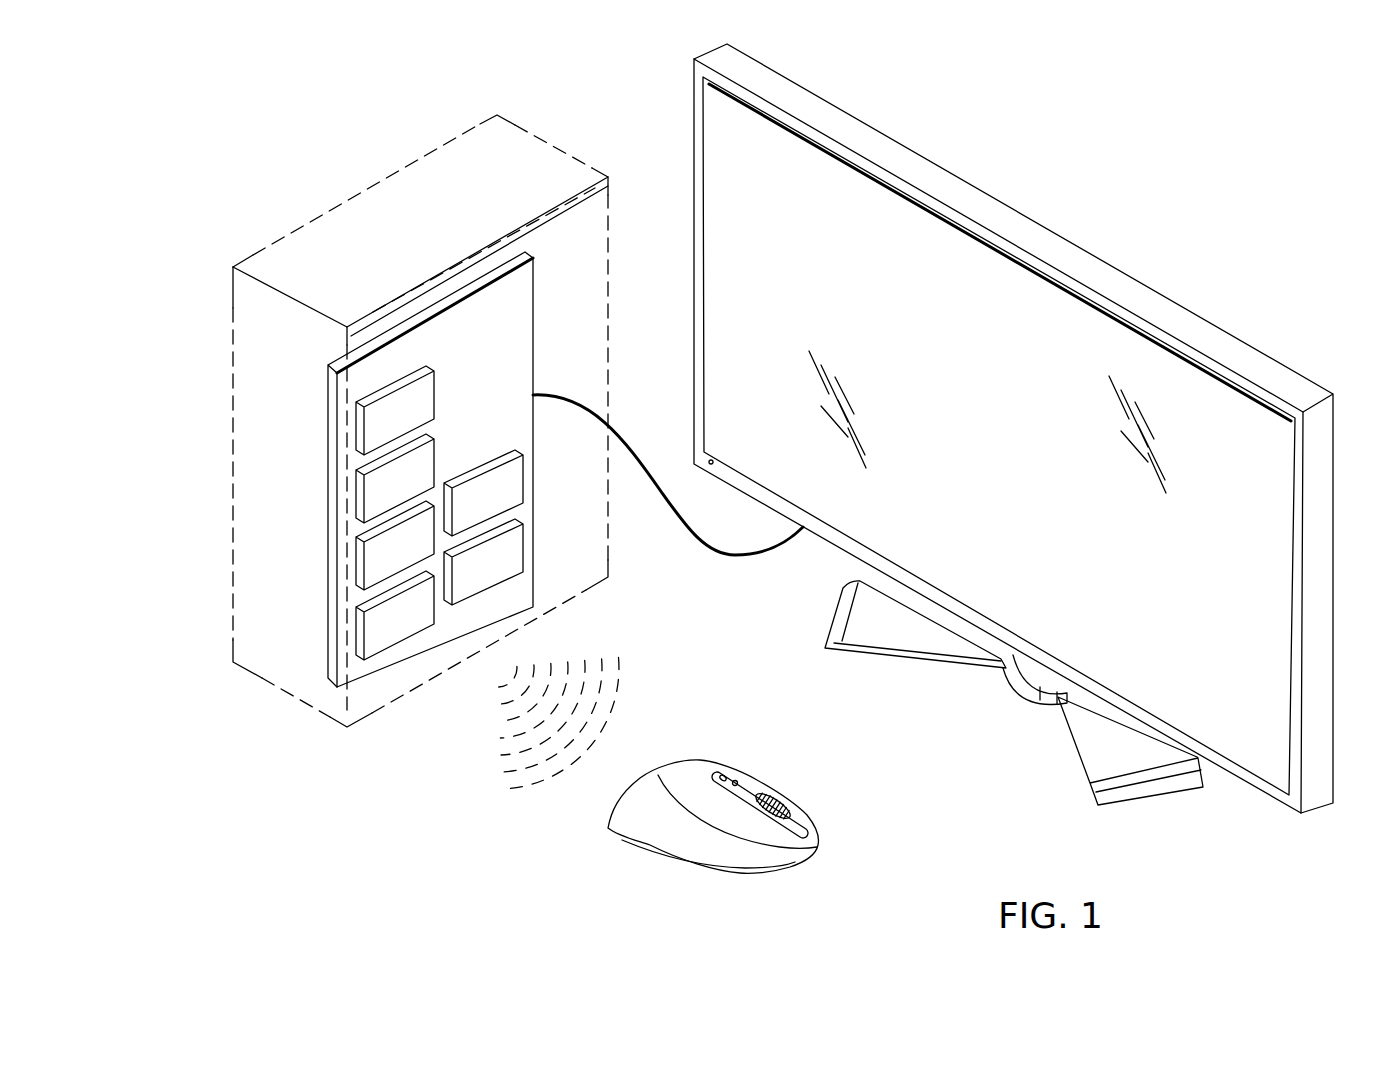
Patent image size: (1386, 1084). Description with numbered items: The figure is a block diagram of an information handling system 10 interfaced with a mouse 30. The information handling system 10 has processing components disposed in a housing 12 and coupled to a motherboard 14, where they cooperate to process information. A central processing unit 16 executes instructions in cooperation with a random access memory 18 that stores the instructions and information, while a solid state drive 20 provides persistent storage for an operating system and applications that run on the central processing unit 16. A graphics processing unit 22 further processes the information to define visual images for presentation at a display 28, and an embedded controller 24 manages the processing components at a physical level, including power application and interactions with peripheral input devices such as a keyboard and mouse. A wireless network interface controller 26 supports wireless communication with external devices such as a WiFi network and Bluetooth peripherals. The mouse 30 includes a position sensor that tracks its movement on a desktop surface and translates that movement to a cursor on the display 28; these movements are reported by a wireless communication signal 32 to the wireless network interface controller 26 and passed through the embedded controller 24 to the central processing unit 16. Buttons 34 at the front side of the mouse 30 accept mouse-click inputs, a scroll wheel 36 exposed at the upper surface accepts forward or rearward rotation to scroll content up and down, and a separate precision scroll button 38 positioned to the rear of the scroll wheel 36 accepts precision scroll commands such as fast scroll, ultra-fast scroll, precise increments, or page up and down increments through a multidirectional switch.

The information handling system 10 is at (256, 175).
The housing 12 is at (233, 375).
The motherboard 14 is at (517, 345).
The central processing unit (CPU) 16 is at (370, 432).
The random access memory (RAM) 18 is at (373, 502).
The solid state drive (SSD) 20 is at (373, 567).
The graphics processing unit (GPU) 22 is at (373, 633).
The embedded controller 24 is at (520, 553).
The wireless network interface controller (WNIC) 26 is at (517, 485).
The display 28 is at (1123, 285).
The mouse 30 is at (718, 878).
The wireless communication signal 32 is at (548, 787).
The buttons 34 is at (813, 822).
The scroll wheel 36 is at (785, 793).
The precision scroll button 38 is at (736, 771).